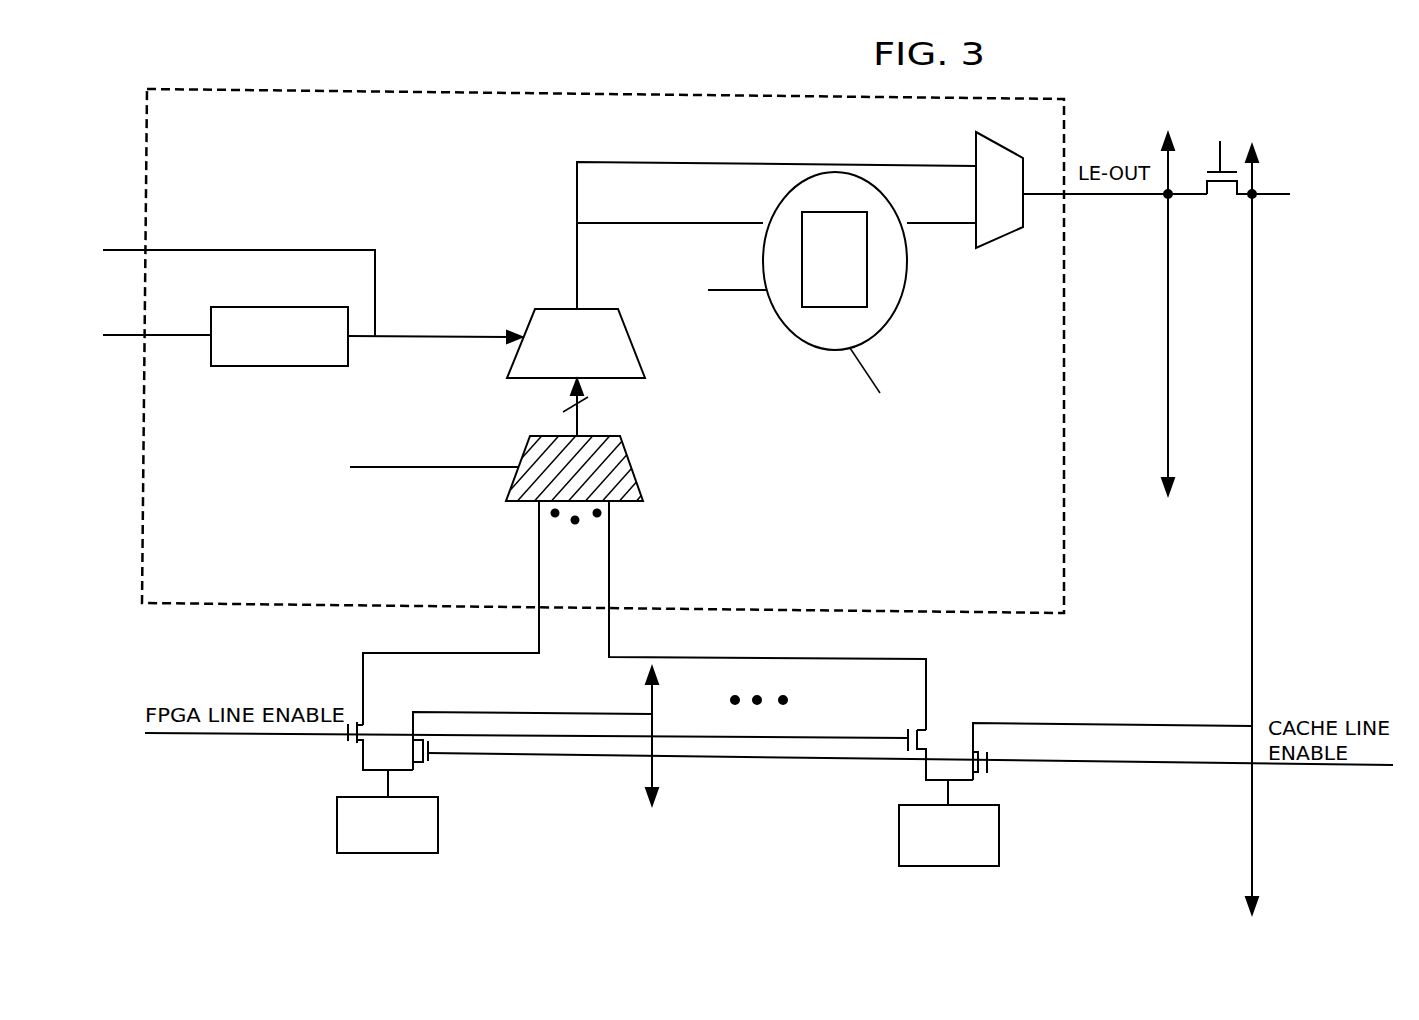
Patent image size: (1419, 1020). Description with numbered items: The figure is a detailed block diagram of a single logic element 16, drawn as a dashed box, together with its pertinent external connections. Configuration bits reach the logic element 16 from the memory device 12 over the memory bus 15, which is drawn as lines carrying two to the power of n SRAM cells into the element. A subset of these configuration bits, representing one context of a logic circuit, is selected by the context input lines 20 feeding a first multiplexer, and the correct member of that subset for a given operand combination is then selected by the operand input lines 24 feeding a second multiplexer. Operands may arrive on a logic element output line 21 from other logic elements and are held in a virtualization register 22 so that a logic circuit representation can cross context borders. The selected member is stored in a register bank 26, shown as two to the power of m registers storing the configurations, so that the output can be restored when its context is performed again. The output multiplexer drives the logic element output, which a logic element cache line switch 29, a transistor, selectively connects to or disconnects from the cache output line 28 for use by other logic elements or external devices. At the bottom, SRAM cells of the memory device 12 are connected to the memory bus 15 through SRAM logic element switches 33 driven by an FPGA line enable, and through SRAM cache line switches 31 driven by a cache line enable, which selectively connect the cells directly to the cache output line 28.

The memory device 12 is at (440, 848).
The memory bus 15 is at (262, 250).
The logic element 16 is at (422, 92).
The context input lines 20 is at (477, 465).
The logic element output line 21 is at (118, 333).
The virtualization register 22 is at (253, 367).
The operand input lines 24 is at (497, 335).
The register bank 26 is at (790, 333).
The cache output line 28 is at (1255, 422).
The logic element cache line switch 29 is at (1223, 165).
The SRAM cache line switch 31 is at (430, 745).
The SRAM logic element switch 33 is at (347, 738).